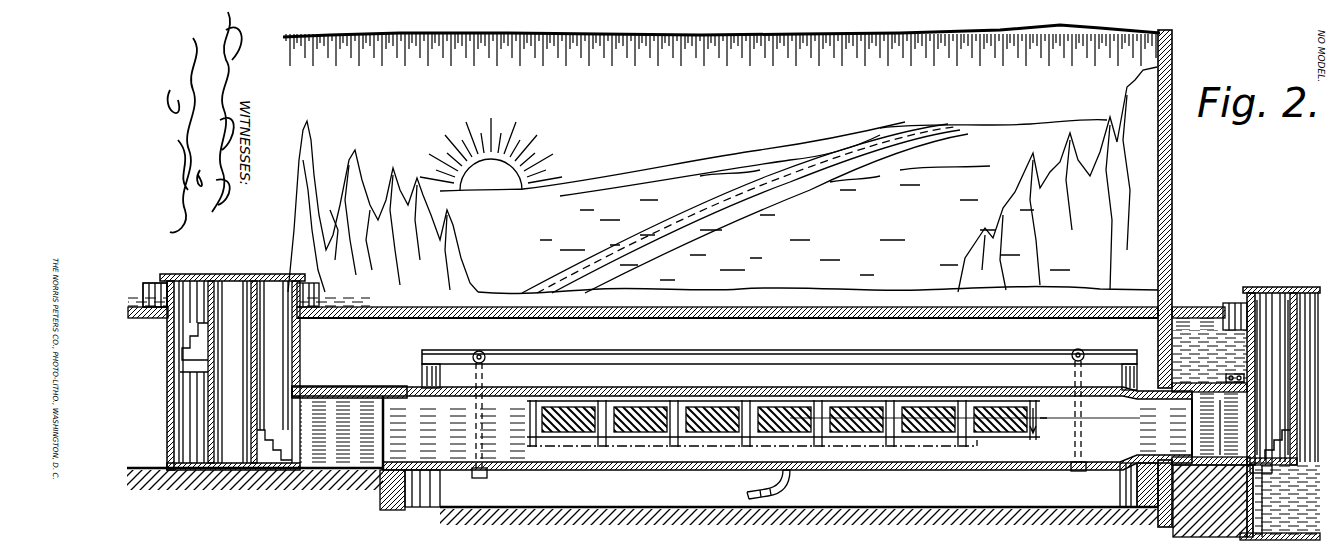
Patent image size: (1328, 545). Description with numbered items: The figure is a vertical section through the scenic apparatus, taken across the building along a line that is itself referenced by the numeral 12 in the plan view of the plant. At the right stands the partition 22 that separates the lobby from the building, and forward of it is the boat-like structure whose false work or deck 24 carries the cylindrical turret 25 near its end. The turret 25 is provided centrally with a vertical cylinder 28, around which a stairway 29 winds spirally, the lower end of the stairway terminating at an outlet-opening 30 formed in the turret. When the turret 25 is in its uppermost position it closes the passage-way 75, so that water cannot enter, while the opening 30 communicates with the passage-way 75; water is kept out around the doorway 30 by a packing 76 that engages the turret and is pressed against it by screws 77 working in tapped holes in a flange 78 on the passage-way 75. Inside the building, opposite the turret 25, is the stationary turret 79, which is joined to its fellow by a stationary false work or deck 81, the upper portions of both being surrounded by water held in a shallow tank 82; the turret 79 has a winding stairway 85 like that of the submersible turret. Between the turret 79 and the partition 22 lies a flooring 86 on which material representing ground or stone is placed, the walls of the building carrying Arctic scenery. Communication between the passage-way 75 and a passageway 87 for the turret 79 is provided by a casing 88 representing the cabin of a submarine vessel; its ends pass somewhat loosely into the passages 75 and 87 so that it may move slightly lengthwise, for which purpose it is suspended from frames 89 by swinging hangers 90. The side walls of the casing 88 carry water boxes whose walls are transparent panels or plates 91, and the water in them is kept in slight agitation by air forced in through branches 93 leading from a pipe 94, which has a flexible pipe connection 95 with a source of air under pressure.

The axis of pipe 12 is at (965, 420).
The partition 22 is at (1173, 179).
The false work or deck 24 is at (1229, 303).
The turret 25 is at (1283, 290).
The vertical cylinder 28 is at (1308, 379).
The stairway 29 is at (1290, 442).
The outlet-opening 30 is at (1272, 377).
The passage-way 75 is at (1226, 494).
The packing 76 is at (1244, 380).
The screws 77 is at (1211, 424).
The flange 78 is at (1235, 427).
The turret 79 is at (172, 427).
The false work or deck 81 is at (163, 275).
The shallow tank 82 is at (143, 283).
The winding stairways 85 is at (190, 376).
The flooring 86 is at (913, 306).
The passageway 87 is at (377, 388).
The casing 88 is at (895, 471).
The frames 89 is at (990, 350).
The swinging hangers 90 is at (483, 378).
The panels or plates 91 is at (718, 412).
The branches 93 is at (823, 438).
The pipe 94 is at (807, 450).
The flexible pipe connection 95 is at (748, 494).